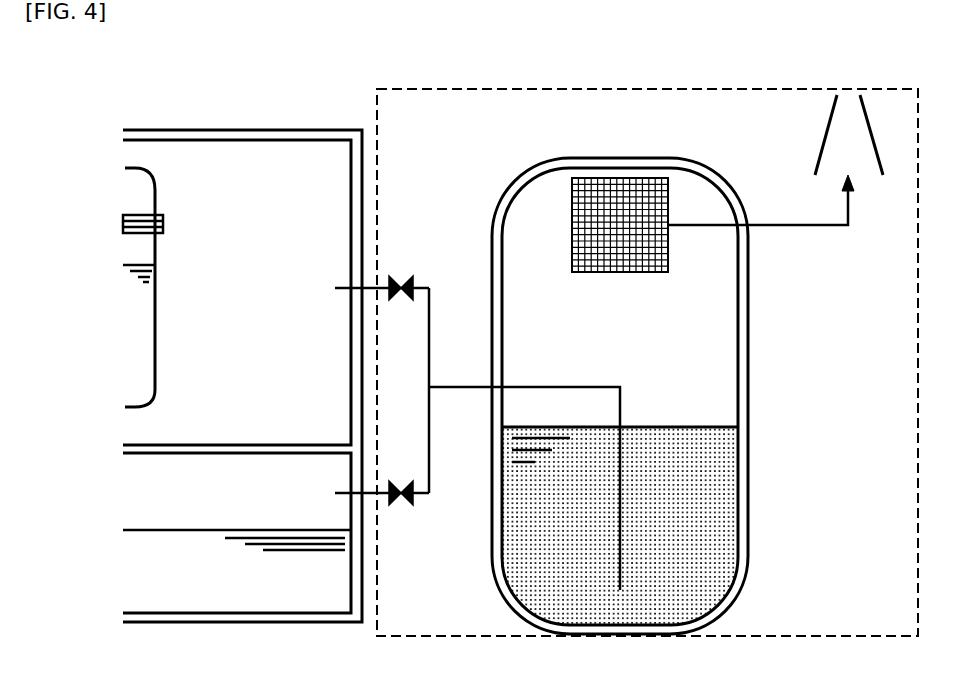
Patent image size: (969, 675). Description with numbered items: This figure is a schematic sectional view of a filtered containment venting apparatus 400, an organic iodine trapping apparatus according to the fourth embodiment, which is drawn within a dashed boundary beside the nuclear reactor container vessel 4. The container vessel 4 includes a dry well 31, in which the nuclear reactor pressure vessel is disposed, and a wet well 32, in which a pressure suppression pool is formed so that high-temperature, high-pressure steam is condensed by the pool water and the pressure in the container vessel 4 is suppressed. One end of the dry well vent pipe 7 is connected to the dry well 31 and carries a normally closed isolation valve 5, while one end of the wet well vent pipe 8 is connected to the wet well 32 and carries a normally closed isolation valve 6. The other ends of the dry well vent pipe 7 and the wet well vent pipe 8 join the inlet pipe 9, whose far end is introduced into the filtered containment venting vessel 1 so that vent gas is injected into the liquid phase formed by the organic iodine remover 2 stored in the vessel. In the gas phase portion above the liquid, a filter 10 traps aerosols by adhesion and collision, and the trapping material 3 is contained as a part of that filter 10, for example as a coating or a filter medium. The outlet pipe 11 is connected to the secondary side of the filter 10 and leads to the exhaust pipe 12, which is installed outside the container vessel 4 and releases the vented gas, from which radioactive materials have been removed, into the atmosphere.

The filtered containment venting apparatus 400 is at (667, 88).
The nuclear reactor container vessel 4 is at (306, 128).
The dry well 31 is at (330, 180).
The wet well 32 is at (332, 511).
The isolation valve 5 is at (401, 277).
The isolation valve 6 is at (401, 482).
The dry well vent pipe 7 is at (431, 333).
The wet well vent pipe 8 is at (431, 452).
The inlet pipe 9 is at (568, 386).
The filtered containment venting vessel 1 is at (614, 166).
The organic iodine remover 2 is at (720, 520).
The trapping material 3 is at (665, 255).
The filter 10 is at (633, 274).
The outlet pipe 11 is at (785, 227).
The exhaust pipe 12 is at (818, 145).